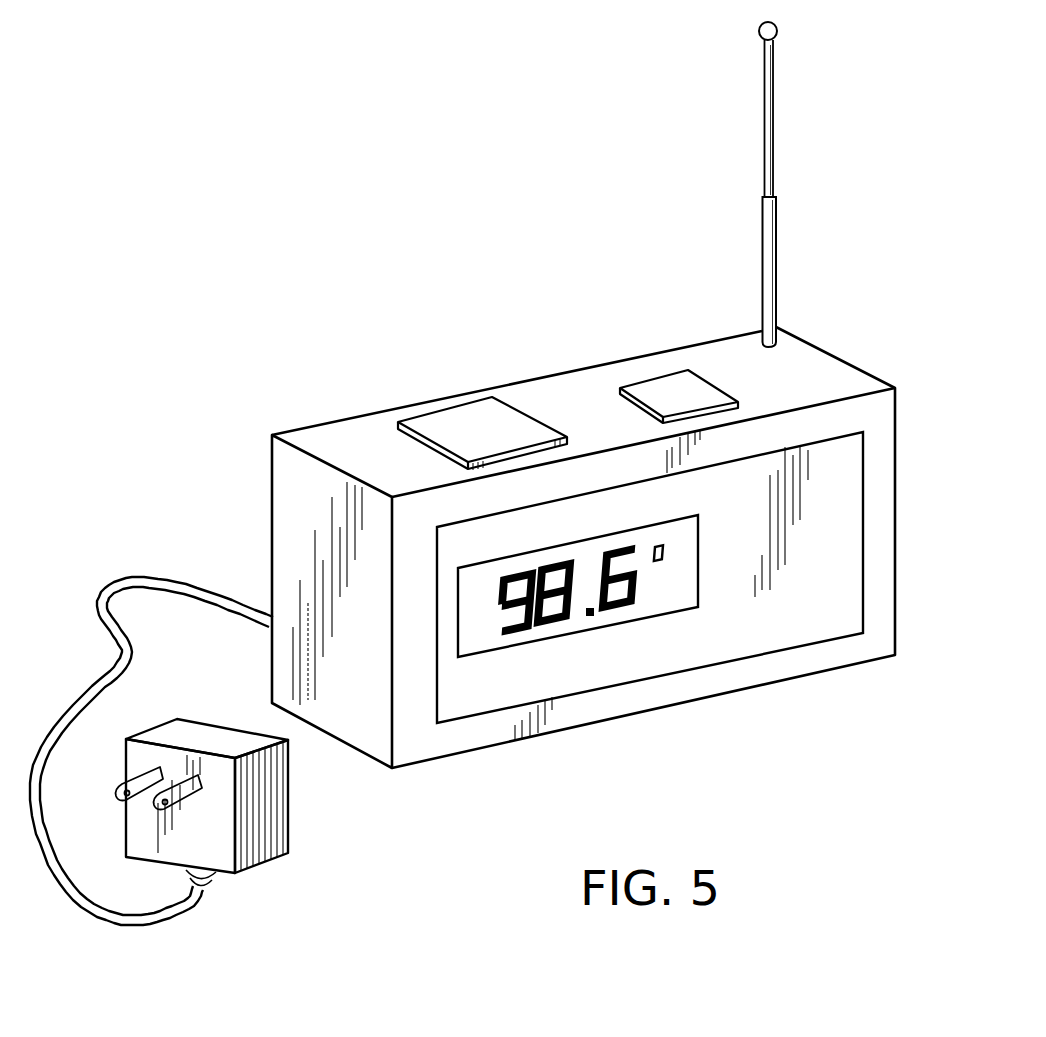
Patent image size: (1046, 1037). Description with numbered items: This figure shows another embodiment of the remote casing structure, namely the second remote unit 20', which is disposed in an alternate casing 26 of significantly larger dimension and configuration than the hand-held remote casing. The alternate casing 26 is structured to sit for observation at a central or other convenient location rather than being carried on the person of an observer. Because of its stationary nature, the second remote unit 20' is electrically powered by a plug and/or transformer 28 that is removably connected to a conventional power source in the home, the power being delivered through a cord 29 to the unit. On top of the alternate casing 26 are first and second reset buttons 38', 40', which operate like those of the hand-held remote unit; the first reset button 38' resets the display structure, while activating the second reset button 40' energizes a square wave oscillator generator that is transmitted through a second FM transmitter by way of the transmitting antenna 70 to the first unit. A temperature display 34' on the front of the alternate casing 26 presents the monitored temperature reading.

The second remote unit 20' is at (603, 395).
The alternate casing 26 is at (845, 373).
The temperature display 34' is at (650, 577).
The first reset button 38' is at (461, 396).
The second reset button 40' is at (656, 357).
The transmitting antenna 70 is at (767, 155).
The power cord 29 is at (158, 577).
The plug and/or transformer 28 is at (277, 820).